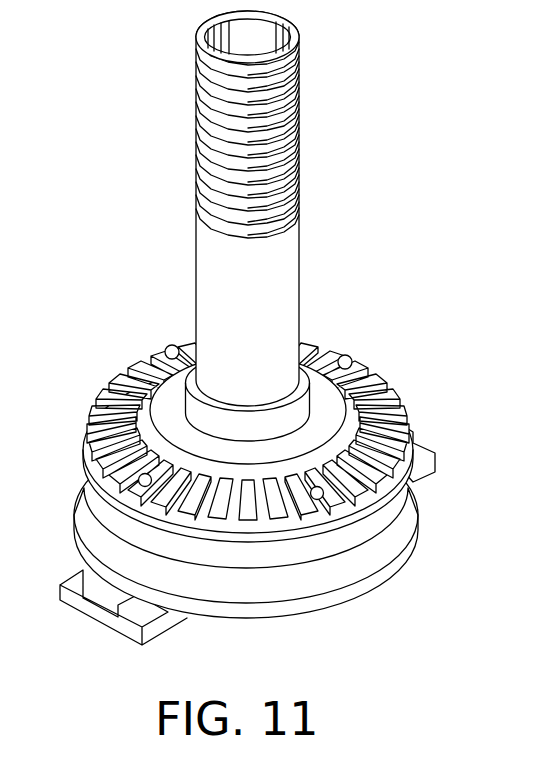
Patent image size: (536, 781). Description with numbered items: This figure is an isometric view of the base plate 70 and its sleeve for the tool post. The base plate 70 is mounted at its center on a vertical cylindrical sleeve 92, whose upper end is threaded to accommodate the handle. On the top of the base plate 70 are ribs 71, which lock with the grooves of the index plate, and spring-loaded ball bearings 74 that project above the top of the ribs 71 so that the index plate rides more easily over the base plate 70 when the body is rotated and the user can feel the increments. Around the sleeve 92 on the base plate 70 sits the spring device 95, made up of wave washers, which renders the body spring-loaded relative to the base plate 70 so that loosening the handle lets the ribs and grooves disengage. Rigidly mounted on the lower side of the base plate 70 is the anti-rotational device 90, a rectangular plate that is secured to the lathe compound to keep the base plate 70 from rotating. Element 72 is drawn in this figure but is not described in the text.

The base plate 70 is at (397, 402).
The ribs 71 is at (392, 385).
The gear top ring face 72 is at (369, 370).
The spring-loaded ball bearings 74 is at (346, 358).
The anti-rotational device 90 is at (436, 453).
The vertical cylindrical sleeve 92 is at (300, 242).
The spring device 95 is at (318, 372).